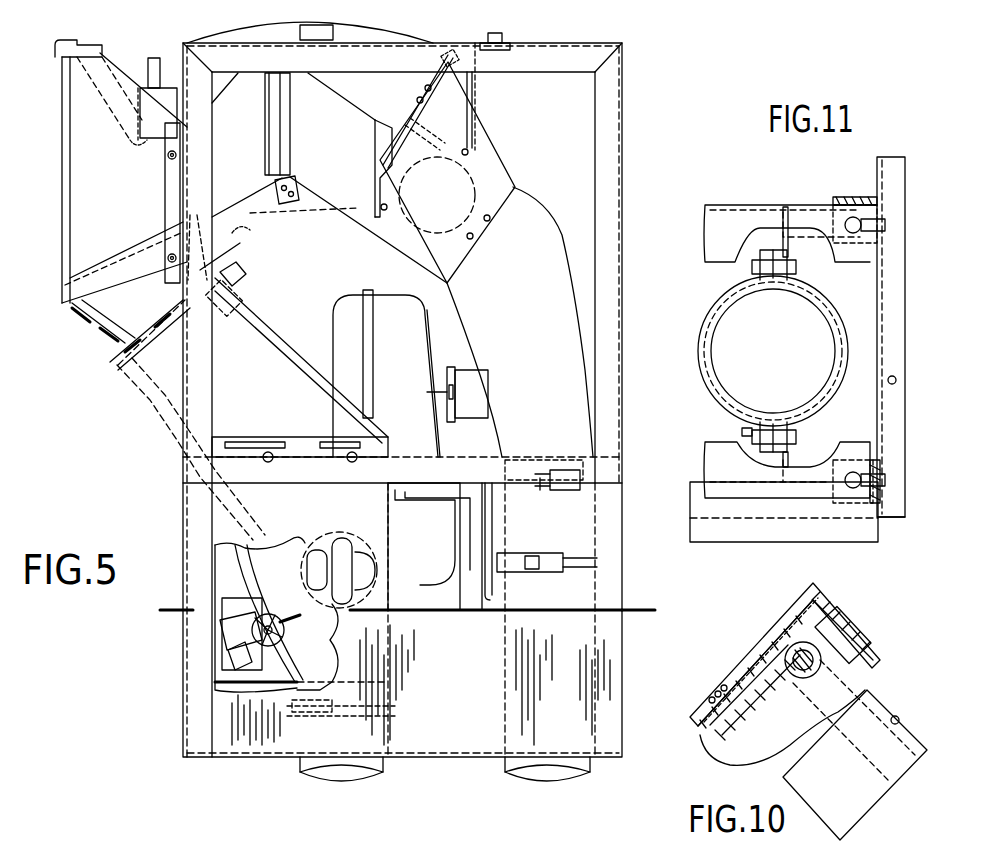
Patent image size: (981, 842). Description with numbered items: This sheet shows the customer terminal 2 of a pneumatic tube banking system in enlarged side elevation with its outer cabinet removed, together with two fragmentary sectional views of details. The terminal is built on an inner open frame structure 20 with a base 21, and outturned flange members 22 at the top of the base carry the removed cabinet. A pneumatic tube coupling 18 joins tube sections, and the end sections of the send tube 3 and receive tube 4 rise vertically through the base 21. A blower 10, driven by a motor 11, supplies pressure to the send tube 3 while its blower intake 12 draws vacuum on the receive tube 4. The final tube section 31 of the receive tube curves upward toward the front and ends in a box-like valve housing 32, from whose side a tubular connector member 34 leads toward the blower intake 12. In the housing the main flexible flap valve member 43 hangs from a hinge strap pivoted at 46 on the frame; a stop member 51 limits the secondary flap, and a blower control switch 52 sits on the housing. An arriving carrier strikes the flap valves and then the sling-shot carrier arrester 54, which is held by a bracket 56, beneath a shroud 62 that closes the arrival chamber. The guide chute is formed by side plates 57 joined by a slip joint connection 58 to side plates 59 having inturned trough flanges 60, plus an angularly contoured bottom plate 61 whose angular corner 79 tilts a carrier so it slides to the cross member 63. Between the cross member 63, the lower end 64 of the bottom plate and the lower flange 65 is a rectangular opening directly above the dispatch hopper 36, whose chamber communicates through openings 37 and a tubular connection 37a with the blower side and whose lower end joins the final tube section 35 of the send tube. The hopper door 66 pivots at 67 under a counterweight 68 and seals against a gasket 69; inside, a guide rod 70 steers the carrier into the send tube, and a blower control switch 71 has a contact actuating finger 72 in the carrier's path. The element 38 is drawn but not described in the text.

In FIG. 5, the customer terminal 2 is at (127, 488).
In FIG. 5, the pneumatic tube (send tube) 3 is at (332, 770).
In FIG. 5, the pneumatic tube (receive tube) 4 is at (532, 770).
In FIG. 5, the blower 10 is at (407, 343).
In FIG. 5, the motor 11 is at (430, 558).
In FIG. 5, the blower intake 12 is at (520, 309).
In FIG. 5, the pneumatic tube coupling 18 is at (530, 574).
In FIG. 11, the pneumatic tube coupling 18 is at (716, 300).
In FIG. 5, the inner open frame structure 20 is at (612, 72).
In FIG. 11, the inner open frame structure 20 is at (853, 170).
In FIG. 5, the base 21 is at (427, 620).
In FIG. 5, the outturned flange members 22 is at (163, 612).
In FIG. 11, the outturned flange members 22 is at (893, 173).
In FIG. 5, the final tube section 31 is at (517, 297).
In FIG. 11, the final tube section 31 is at (730, 343).
In FIG. 5, the valve housing 32 is at (465, 172).
In FIG. 5, the tubular connector member 34 is at (433, 233).
In FIG. 5, the final tube section 35 is at (390, 686).
In FIG. 5, the dispatch hopper 36 is at (292, 418).
In FIG. 10, the dispatch hopper 36 is at (857, 627).
In FIG. 5, the openings 37 is at (53, 295).
In FIG. 5, the tubular connection 37a is at (378, 597).
In FIG. 5, the tank bracket 38 is at (468, 237).
In FIG. 5, the main flexible flap valve member 43 is at (407, 133).
In FIG. 5, the pivot 46 is at (460, 73).
In FIG. 5, the stop member 51 is at (417, 110).
In FIG. 5, the blower control switch 52 is at (480, 147).
In FIG. 5, the carrier arrester 54 is at (143, 140).
In FIG. 5, the bracket 56 is at (135, 122).
In FIG. 5, the side plates 57 is at (337, 138).
In FIG. 5, the slip joint connection 58 is at (283, 156).
In FIG. 5, the side plates 59 is at (245, 160).
In FIG. 5, the inturned trough flanges 60 is at (117, 277).
In FIG. 5, the bottom plate 61 is at (252, 233).
In FIG. 5, the shroud 62 is at (385, 25).
In FIG. 5, the cross member 63 is at (85, 322).
In FIG. 5, the lower end of bottom plate 64 is at (196, 275).
In FIG. 5, the lower flange 65 is at (143, 313).
In FIG. 10, the hopper door 66 is at (710, 737).
In FIG. 5, the pivot 67 is at (238, 282).
In FIG. 10, the pivot 67 is at (800, 667).
In FIG. 5, the counterweight 68 is at (230, 305).
In FIG. 10, the counterweight 68 is at (852, 798).
In FIG. 10, the gasket 69 is at (718, 690).
In FIG. 5, the guide rod 70 is at (267, 590).
In FIG. 5, the blower control switch 71 is at (233, 655).
In FIG. 5, the contact actuating finger 72 is at (293, 623).
In FIG. 5, the angular corner 79 is at (293, 207).